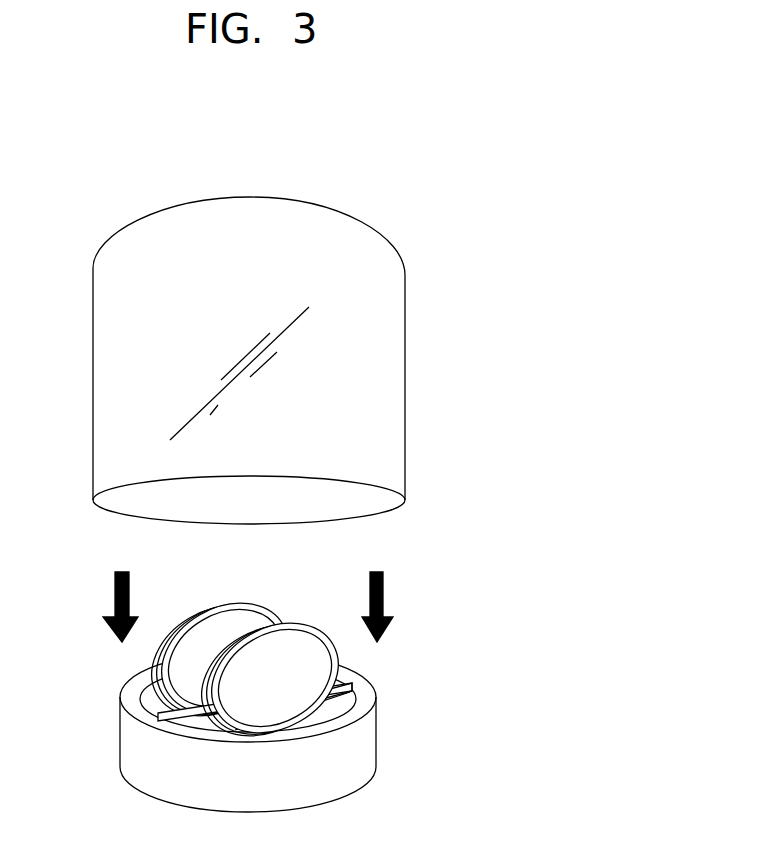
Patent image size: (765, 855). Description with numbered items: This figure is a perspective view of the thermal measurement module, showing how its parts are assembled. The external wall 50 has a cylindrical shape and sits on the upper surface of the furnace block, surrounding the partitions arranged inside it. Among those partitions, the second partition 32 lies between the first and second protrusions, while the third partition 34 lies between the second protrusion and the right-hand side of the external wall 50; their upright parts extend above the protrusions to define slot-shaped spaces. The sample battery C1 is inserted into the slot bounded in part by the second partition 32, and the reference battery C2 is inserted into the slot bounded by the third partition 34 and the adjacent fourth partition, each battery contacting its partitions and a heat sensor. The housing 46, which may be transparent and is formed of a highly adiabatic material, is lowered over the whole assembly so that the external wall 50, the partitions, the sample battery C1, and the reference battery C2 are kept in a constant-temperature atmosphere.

The housing 46 is at (337, 212).
The external wall 50 is at (247, 703).
The second partition 32 is at (160, 712).
The third partition 34 is at (340, 690).
The sample battery C1 is at (162, 682).
The reference battery C2 is at (220, 710).